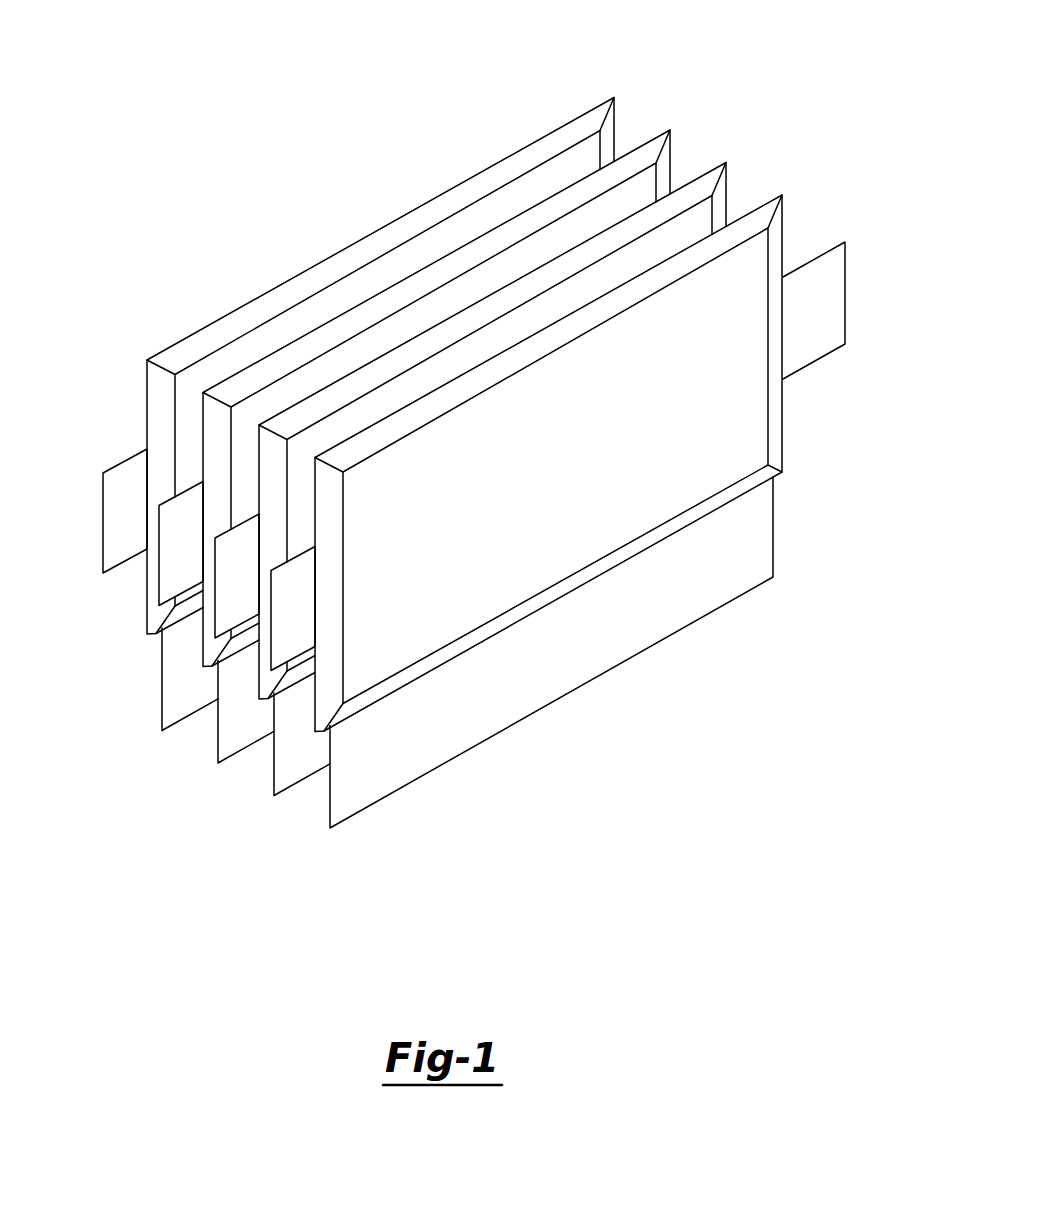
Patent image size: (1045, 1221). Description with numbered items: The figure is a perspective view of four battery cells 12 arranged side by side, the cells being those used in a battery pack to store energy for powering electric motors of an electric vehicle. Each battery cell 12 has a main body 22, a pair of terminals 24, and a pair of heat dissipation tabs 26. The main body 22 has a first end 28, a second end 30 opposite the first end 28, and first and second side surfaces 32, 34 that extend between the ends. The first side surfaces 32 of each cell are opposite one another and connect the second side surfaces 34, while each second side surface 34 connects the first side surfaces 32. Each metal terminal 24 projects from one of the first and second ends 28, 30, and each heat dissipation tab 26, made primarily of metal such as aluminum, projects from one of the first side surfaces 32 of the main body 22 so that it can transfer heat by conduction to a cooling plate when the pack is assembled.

The battery cell 12 is at (481, 437).
The main body 22 is at (614, 230).
The terminal 24 is at (287, 628).
The heat dissipation tab 26 is at (183, 707).
The first end 28 is at (275, 467).
The second end 30 is at (614, 130).
The first side surface 32 is at (480, 393).
The second side surface 34 is at (378, 422).